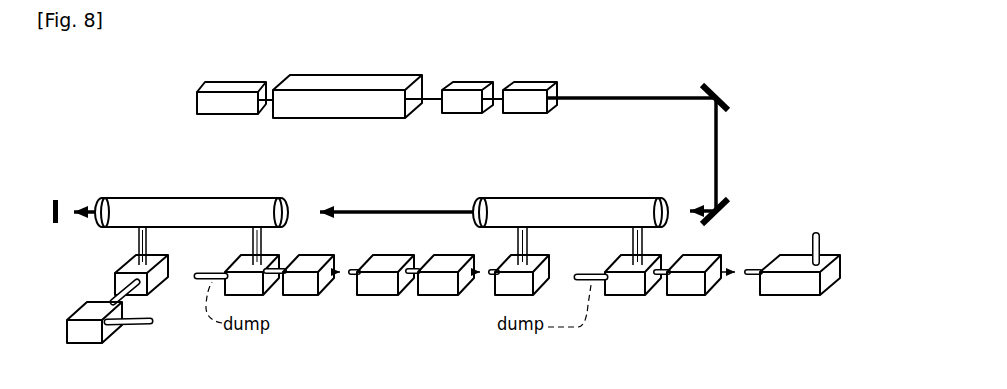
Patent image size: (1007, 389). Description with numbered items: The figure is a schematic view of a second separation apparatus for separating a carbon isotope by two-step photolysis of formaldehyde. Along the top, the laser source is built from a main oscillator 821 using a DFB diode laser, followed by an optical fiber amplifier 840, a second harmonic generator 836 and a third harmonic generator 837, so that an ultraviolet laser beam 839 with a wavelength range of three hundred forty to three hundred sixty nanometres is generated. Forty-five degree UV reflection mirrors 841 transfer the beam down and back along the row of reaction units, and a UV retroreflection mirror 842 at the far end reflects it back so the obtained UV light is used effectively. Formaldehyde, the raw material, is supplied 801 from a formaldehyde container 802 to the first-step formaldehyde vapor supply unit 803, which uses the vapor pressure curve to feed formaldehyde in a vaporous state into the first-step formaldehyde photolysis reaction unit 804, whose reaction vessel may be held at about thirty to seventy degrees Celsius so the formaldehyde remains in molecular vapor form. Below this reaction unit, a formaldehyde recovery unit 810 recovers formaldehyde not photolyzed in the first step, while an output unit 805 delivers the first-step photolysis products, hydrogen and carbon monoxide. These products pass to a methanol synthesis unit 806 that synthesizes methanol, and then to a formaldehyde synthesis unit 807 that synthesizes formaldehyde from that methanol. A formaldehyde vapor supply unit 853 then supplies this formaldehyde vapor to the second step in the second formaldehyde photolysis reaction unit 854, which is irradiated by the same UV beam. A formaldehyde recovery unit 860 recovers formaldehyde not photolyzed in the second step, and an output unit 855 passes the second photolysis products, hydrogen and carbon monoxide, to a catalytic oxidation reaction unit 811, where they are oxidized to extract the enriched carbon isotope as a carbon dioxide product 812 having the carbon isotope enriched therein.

The main oscillator 821 is at (231, 98).
The optical fiber amplifier 840 is at (347, 96).
The second harmonic generator 836 is at (467, 98).
The third harmonic generator 837 is at (530, 98).
The ultraviolet laser beam 839 is at (658, 101).
The 45 degree UV reflection mirrors 841 is at (728, 210).
The UV retroreflection mirror 842 is at (55, 199).
The first-step formaldehyde photolysis reaction unit 804 is at (191, 212).
The second formaldehyde photolysis reaction unit 854 is at (570, 212).
The first-step formaldehyde vapor supply unit 803 is at (127, 265).
The formaldehyde container 802 is at (94, 323).
The formaldehyde supply 801 is at (130, 332).
The formaldehyde recovery unit 810 is at (252, 275).
The output unit 805 is at (308, 275).
The methanol synthesis unit 806 is at (385, 275).
The formaldehyde synthesis unit 807 is at (446, 275).
The formaldehyde vapor supply unit 853 is at (522, 275).
The formaldehyde recovery unit 860 is at (633, 275).
The output unit 855 is at (694, 275).
The catalytic oxidation reaction unit 811 is at (800, 275).
The carbon dioxide product 812 is at (816, 233).